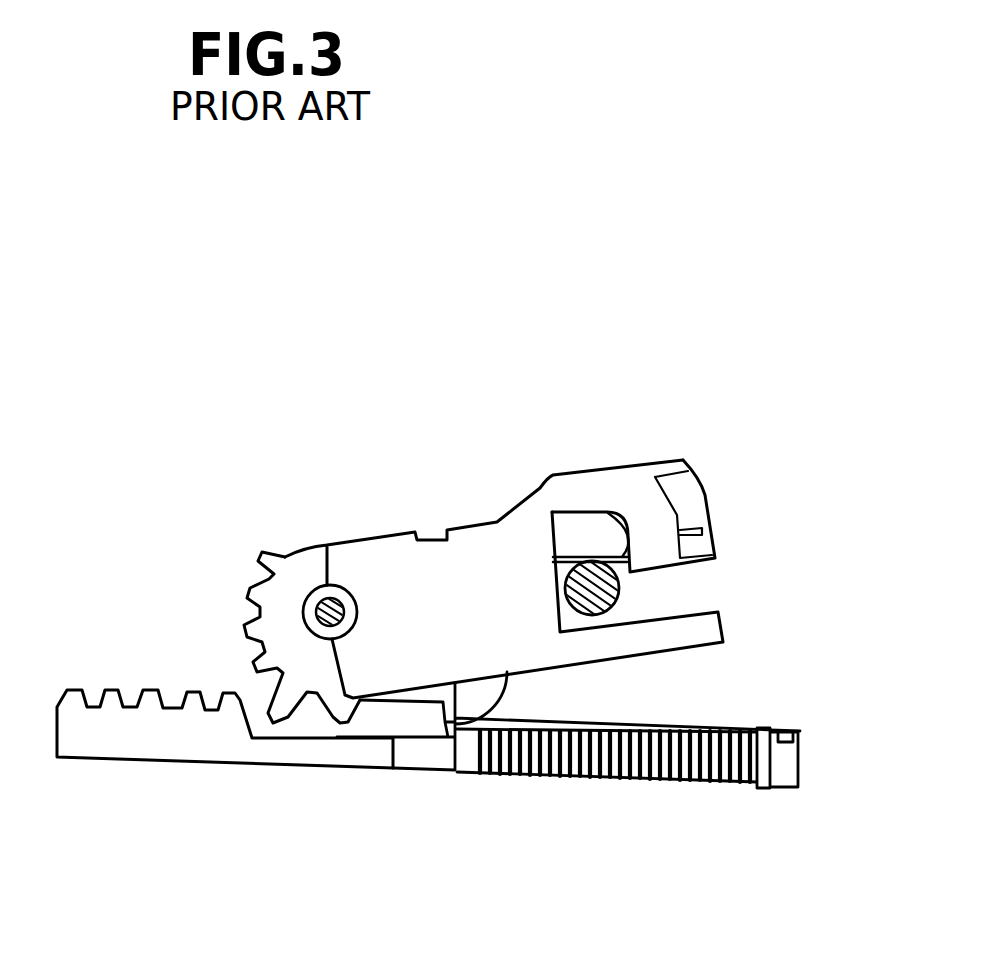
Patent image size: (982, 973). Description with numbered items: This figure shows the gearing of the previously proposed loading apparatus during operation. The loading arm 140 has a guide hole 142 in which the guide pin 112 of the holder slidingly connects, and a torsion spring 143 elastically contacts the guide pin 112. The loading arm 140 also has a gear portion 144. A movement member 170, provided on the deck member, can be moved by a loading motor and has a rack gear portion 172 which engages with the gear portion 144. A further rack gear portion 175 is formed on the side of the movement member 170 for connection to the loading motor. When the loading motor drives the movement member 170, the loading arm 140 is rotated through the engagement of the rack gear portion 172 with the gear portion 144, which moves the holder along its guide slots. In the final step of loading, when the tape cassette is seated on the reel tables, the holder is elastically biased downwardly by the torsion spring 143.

The loading arm 140 is at (448, 482).
The guide hole 142 is at (703, 585).
The torsion spring 143 is at (588, 550).
The guide pin 112 is at (603, 598).
The gear portion 144 is at (263, 553).
The rack gear portion 172 is at (148, 690).
The movement member 170 is at (460, 793).
The rack gear portion 175 is at (618, 783).